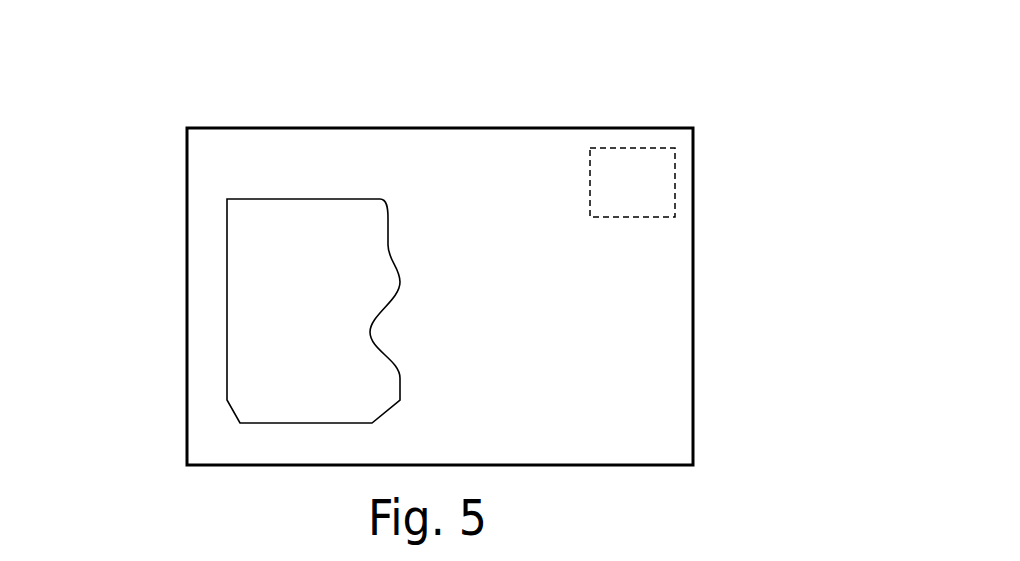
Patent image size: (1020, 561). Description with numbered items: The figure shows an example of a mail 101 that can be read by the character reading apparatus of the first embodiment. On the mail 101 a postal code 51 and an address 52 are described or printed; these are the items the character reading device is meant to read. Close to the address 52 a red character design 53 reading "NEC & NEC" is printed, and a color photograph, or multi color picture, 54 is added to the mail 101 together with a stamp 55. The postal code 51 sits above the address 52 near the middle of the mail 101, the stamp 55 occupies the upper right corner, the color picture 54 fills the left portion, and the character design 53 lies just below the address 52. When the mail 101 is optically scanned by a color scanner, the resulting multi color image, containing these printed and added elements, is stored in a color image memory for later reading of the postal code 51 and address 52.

The mail 101 is at (609, 129).
The postal code 51 is at (454, 198).
The address 52 is at (583, 288).
The red character design 53 is at (545, 352).
The color photograph 54 is at (227, 383).
The stamp 55 is at (675, 198).